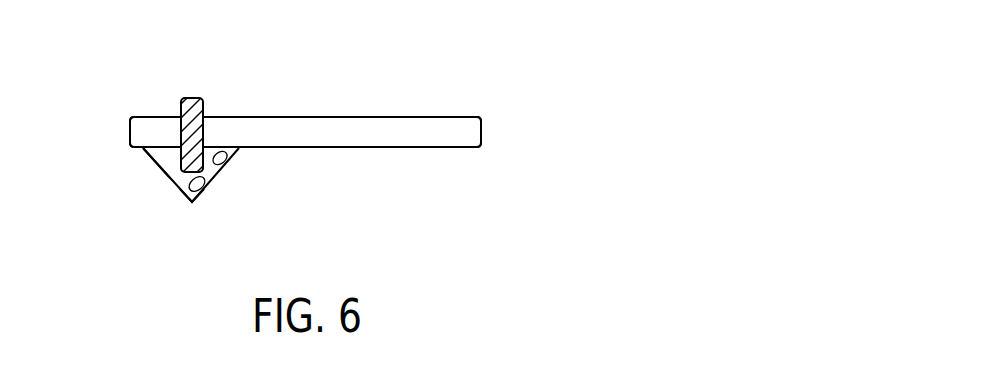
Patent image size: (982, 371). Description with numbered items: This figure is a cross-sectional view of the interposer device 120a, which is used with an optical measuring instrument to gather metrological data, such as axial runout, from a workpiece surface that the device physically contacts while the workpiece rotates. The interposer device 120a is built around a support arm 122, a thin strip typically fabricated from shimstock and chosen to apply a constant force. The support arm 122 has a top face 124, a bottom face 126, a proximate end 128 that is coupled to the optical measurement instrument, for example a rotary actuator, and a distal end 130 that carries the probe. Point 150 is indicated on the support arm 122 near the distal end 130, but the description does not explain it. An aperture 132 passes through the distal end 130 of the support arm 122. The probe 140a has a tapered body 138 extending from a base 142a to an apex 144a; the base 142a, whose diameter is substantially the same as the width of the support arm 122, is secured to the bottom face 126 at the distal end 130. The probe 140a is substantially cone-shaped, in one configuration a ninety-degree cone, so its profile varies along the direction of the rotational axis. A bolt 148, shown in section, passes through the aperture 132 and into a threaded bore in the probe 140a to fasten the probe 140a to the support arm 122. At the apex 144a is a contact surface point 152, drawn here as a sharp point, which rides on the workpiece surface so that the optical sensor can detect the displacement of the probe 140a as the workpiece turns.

The interposer device 120a is at (582, 104).
The support arm 122 is at (315, 130).
The top face 124 is at (412, 118).
The bottom face 126 is at (440, 148).
The proximate end 128 is at (476, 117).
The distal end 130 is at (153, 118).
The aperture 132 is at (203, 118).
The tapered body 138 is at (138, 176).
The probe 140a is at (230, 157).
The base 142a is at (143, 153).
The apex 144a is at (213, 187).
The bolt 148 is at (197, 97).
The contact point 150 is at (421, 104).
The contact surface point 152 is at (192, 203).